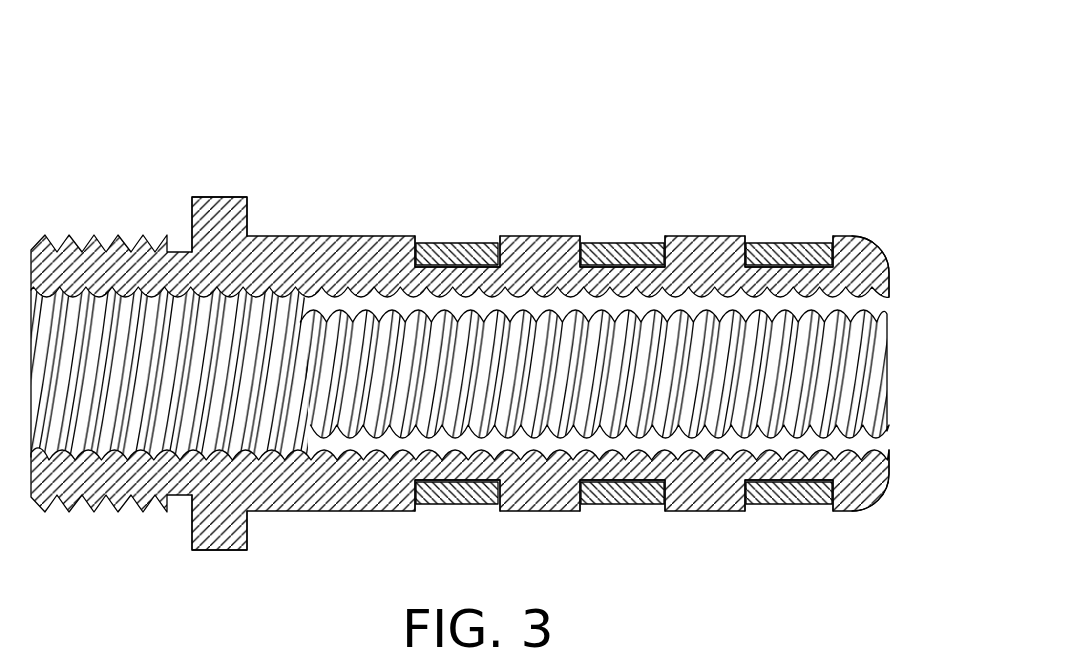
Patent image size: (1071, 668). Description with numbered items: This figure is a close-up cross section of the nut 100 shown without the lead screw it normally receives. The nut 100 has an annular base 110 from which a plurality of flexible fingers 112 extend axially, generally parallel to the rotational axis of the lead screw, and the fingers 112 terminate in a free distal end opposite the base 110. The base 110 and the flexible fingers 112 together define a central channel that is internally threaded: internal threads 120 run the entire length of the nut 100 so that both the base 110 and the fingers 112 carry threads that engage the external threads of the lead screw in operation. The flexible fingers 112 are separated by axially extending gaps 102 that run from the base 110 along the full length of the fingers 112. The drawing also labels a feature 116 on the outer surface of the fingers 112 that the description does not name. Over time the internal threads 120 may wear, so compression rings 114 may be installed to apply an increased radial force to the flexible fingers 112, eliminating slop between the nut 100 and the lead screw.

The nut 100 is at (773, 106).
The axially extending gaps 102 is at (857, 308).
The annular base 110 is at (248, 532).
The flexible fingers 112 is at (877, 240).
The compression rings 114 is at (468, 242).
The groove 116 is at (410, 272).
The internal threads 120 is at (596, 433).